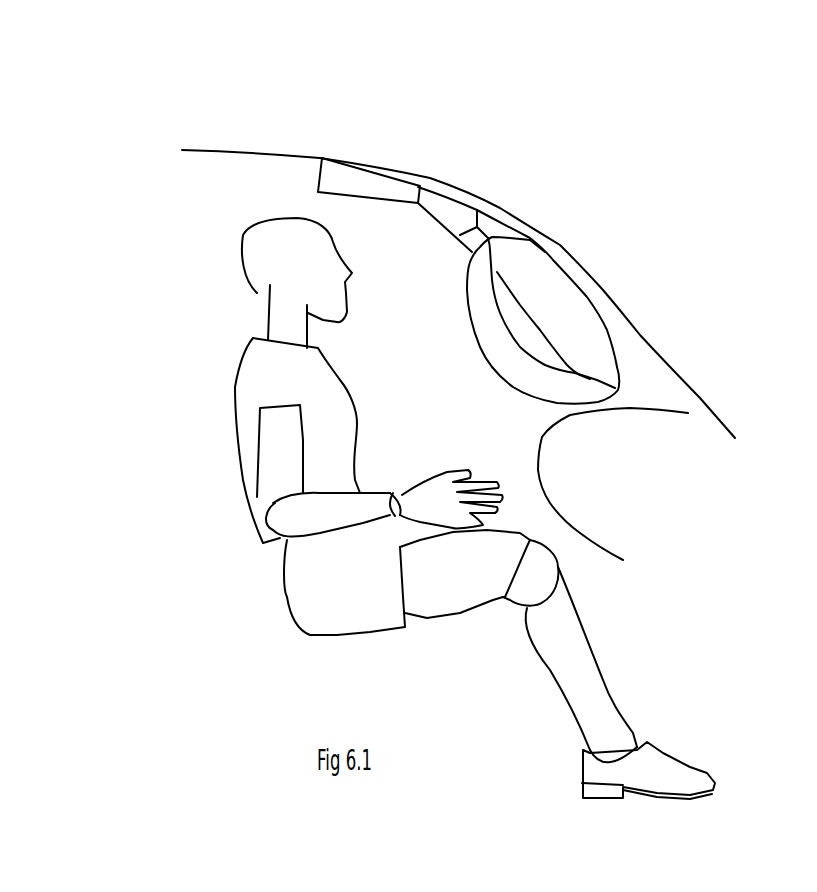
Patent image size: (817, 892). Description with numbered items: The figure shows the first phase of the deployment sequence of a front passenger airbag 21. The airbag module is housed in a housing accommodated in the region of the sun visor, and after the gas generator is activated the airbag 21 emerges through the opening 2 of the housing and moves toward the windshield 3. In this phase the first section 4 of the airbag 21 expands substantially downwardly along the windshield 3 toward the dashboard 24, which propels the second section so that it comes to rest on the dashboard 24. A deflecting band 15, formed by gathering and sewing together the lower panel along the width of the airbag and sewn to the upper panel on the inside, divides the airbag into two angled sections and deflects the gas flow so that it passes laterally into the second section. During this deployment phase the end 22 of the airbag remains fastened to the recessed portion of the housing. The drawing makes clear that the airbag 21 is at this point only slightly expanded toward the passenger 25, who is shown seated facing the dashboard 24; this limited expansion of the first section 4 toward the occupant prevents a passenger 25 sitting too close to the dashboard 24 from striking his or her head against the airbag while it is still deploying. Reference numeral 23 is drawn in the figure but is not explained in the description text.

The opening 2 is at (418, 203).
The windshield 3 is at (593, 275).
The first section 4 is at (542, 288).
The deflecting band 15 is at (597, 380).
The airbag 21 is at (525, 221).
The end 22 is at (488, 238).
The gas outlet / diffuser 23 is at (482, 256).
The dashboard 24 is at (637, 445).
The passenger 25 is at (233, 393).